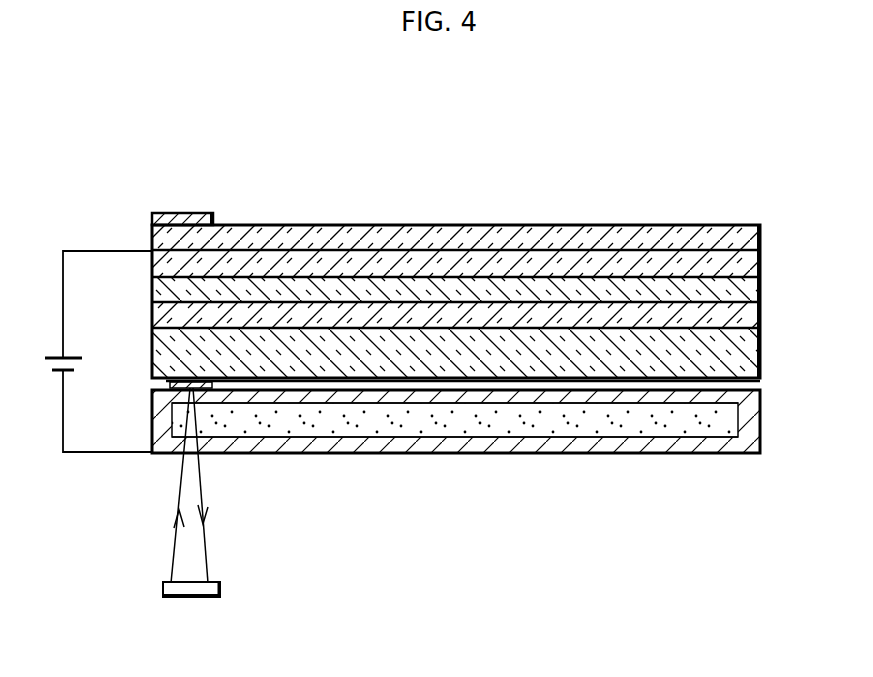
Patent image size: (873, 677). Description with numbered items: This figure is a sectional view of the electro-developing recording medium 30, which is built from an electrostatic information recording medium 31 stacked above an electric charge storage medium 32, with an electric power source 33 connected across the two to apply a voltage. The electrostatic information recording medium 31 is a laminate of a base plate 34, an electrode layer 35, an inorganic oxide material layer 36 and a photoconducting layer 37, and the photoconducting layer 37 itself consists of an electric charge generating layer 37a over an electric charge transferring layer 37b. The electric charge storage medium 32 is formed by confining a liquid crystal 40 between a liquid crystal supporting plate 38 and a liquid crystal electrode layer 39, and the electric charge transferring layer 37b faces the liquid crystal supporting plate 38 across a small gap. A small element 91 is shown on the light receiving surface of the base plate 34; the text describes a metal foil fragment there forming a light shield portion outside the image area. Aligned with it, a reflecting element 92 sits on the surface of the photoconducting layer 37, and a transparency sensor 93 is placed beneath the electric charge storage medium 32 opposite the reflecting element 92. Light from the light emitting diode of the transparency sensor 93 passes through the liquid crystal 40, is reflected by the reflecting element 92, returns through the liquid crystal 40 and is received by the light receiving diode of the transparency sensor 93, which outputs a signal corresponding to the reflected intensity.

The electro-developing recording medium 30 is at (448, 325).
The electrostatic information recording medium 31 is at (448, 264).
The electric charge storage medium 32 is at (456, 463).
The electric power source 33 is at (52, 352).
The base plate 34 is at (693, 240).
The electrode layer 35 is at (763, 258).
The inorganic oxide material layer 36 is at (763, 288).
The photoconducting layer 37 is at (445, 332).
The electric charge generating layer 37a is at (152, 310).
The electric charge transferring layer 37b is at (152, 346).
The liquid crystal supporting plate 38 is at (760, 388).
The liquid crystal electrode layer 39 is at (329, 446).
The liquid crystal 40 is at (440, 422).
The terminal electrode 91 is at (179, 211).
The reflecting element 92 is at (166, 385).
The transparency sensor 93 is at (190, 600).